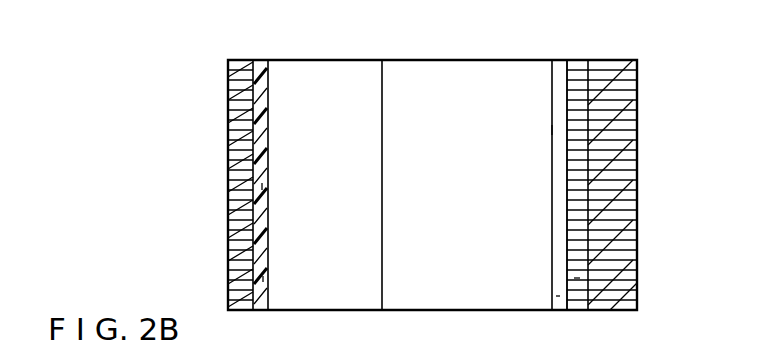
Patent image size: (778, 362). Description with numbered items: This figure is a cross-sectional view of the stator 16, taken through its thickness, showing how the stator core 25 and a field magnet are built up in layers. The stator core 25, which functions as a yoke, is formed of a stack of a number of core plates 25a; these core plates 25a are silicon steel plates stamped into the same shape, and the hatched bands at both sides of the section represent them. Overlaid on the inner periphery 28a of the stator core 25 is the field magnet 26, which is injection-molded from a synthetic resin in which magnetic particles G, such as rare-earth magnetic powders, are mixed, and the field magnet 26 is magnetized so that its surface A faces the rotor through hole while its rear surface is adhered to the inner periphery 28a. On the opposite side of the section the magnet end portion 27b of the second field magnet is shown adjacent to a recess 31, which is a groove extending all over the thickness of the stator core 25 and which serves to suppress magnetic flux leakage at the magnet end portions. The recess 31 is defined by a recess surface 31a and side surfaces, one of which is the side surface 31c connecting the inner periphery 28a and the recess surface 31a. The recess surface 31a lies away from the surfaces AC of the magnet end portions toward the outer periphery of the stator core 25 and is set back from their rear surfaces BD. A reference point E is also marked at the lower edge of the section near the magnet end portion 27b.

The stator 16 is at (470, 309).
The stator core 25 is at (637, 122).
The core plates 25a is at (232, 118).
The field magnet 26 is at (262, 84).
The magnet end portion 27b is at (560, 85).
The inner periphery 28a is at (226, 224).
The recess 31 is at (399, 68).
The recess surface 31a is at (590, 186).
The side surface 31c is at (578, 73).
The surface A is at (266, 279).
The magnetic particles G is at (262, 186).
The point E is at (558, 298).
The surfaces of magnet end portions AC is at (552, 131).
The rear surfaces of magnet end portions BD is at (577, 278).